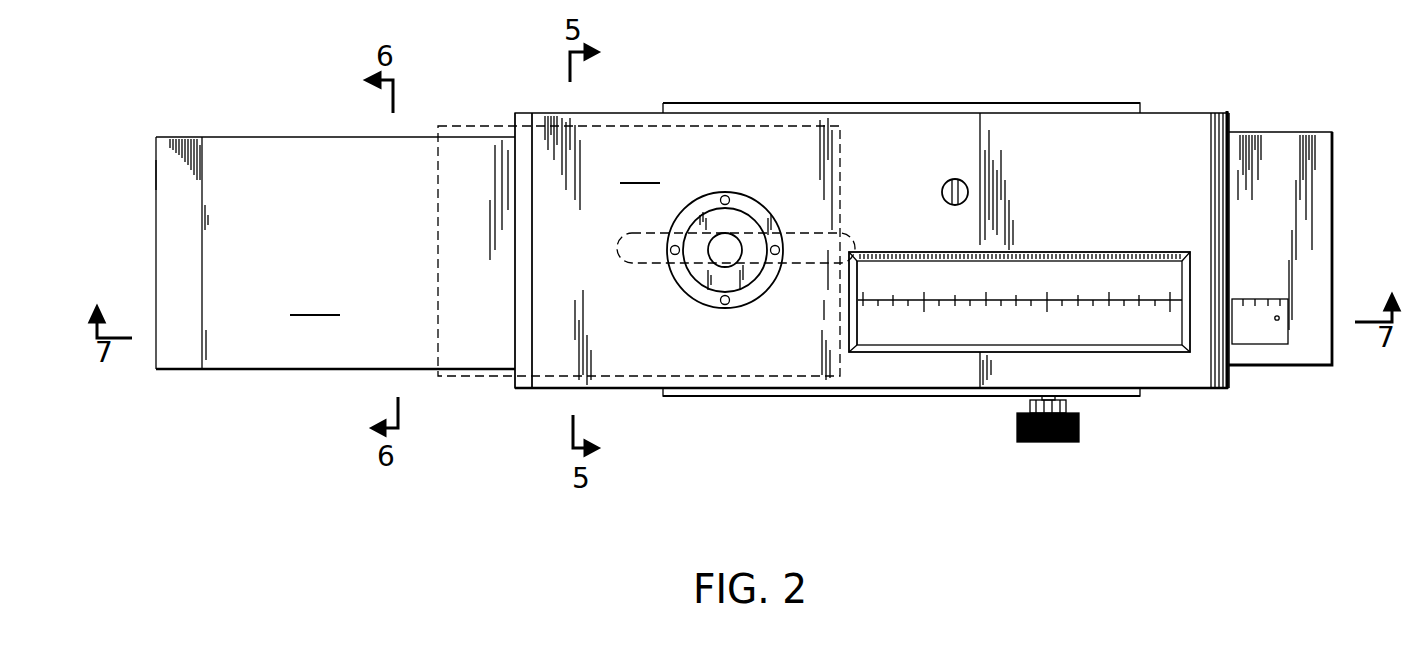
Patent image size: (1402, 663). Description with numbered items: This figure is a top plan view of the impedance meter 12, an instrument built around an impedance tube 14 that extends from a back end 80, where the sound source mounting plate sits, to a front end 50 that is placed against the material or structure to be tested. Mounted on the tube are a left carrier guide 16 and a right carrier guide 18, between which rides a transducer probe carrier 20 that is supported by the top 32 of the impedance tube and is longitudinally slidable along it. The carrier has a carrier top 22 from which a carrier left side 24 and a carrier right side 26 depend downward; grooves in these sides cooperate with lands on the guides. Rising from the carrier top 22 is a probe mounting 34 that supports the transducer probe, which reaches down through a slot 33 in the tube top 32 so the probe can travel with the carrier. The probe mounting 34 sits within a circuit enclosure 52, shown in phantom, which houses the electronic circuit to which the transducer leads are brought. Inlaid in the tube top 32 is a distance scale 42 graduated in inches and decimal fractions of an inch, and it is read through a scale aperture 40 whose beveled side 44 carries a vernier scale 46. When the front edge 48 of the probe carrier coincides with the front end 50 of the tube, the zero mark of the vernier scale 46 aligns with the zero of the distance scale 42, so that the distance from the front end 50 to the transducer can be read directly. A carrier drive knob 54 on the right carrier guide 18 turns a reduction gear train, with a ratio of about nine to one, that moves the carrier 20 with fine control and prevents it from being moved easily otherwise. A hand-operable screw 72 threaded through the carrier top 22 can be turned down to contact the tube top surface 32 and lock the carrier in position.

The impedance meter 12 is at (173, 142).
The impedance tube 14 is at (317, 137).
The left carrier guide 16 is at (820, 102).
The right carrier guide 18 is at (797, 396).
The transducer probe carrier 20 is at (534, 113).
The carrier top 22 is at (640, 171).
The carrier left side 24 is at (1192, 112).
The carrier right side 26 is at (640, 388).
The top of the impedance tube 32 is at (315, 302).
The slot 33 is at (645, 234).
The probe mounting 34 is at (731, 306).
The scale aperture 40 is at (1152, 255).
The distance scale 42 is at (1271, 298).
The beveled side 44 is at (1065, 274).
The vernier scale 46 is at (900, 300).
The front edge of the probe carrier 48 is at (1236, 116).
The front end of the impedance tube 50 is at (1332, 175).
The circuit enclosure 52 is at (438, 186).
The carrier drive knob 54 is at (1080, 436).
The hand-operable screw 72 is at (944, 187).
The back end of the impedance tube 80 is at (156, 179).